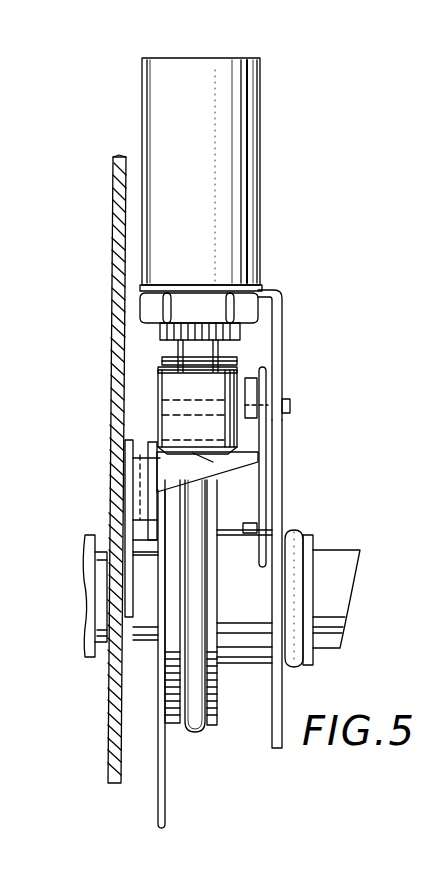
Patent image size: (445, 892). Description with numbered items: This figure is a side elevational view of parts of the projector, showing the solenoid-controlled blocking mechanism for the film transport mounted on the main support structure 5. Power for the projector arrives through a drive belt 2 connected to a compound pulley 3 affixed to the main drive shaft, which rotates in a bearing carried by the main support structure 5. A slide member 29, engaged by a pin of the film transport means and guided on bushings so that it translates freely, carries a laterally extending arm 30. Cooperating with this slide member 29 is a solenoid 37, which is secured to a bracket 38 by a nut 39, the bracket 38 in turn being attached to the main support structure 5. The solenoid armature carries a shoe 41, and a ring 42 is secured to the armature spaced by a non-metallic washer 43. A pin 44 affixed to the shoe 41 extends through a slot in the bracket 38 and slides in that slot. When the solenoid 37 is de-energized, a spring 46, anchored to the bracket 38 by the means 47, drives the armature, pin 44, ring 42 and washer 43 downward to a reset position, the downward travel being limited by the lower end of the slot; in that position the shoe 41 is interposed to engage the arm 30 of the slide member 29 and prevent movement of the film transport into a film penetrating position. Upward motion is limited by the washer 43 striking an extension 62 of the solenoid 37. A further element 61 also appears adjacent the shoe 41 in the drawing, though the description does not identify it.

The drive belt 2 is at (193, 730).
The compound pulley 3 is at (258, 655).
The main support structure 5 is at (115, 263).
The slide member 29 is at (130, 465).
The laterally extending arm 30 is at (160, 458).
The solenoid 37 is at (248, 195).
The bracket 38 is at (285, 307).
The nut 39 is at (250, 303).
The shoe 41 is at (243, 433).
The ring 42 is at (242, 370).
The non-metallic washer 43 is at (230, 356).
The pin 44 is at (290, 403).
The spring 46 is at (263, 503).
The anchoring means 47 is at (253, 388).
The wedge 61 is at (210, 458).
The extension 62 is at (162, 338).